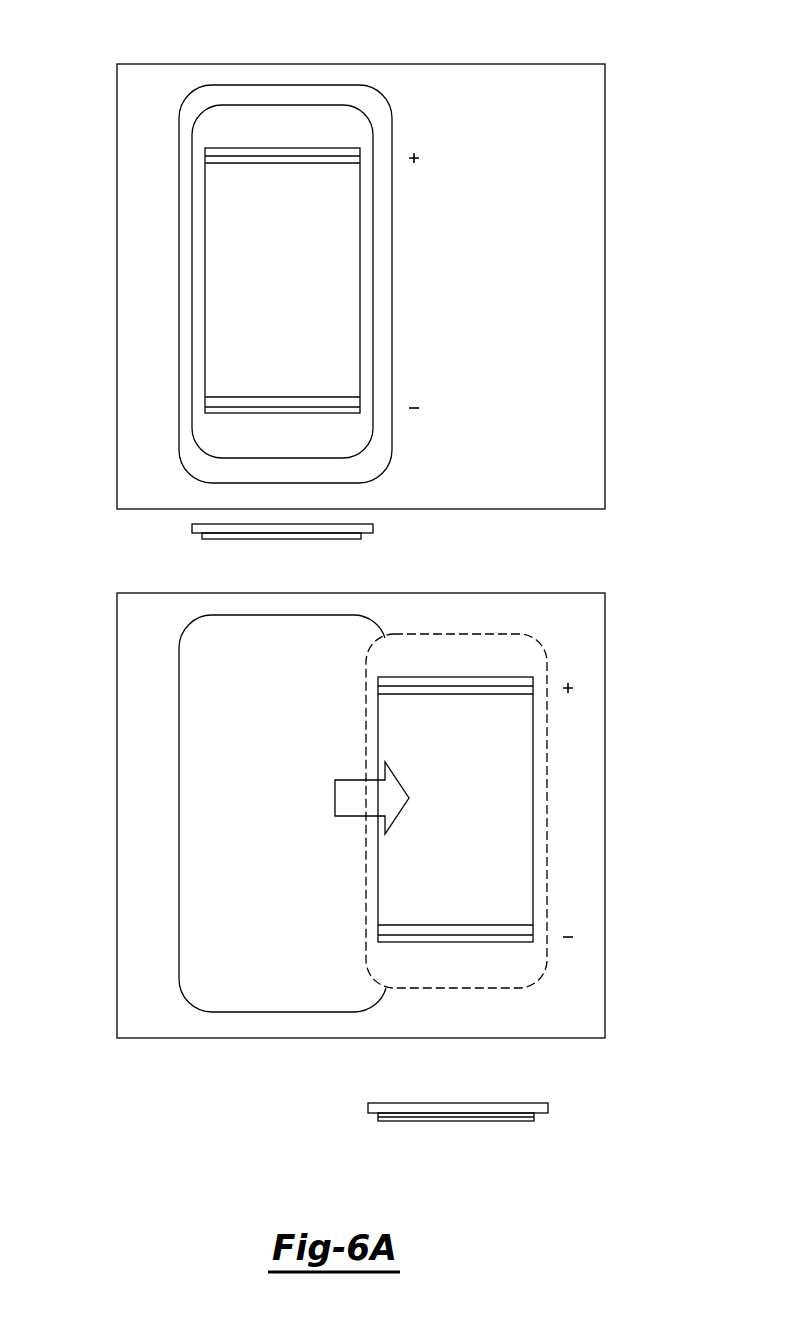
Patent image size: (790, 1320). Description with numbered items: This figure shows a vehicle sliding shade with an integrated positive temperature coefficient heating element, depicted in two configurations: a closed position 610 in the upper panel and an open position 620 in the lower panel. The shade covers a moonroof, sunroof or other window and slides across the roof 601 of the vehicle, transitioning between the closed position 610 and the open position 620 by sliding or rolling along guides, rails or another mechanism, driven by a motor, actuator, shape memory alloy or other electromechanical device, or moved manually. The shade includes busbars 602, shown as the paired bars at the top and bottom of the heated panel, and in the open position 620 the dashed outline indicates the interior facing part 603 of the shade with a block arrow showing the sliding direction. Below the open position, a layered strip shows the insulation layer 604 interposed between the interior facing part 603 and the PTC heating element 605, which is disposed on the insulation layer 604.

The closed position 610 is at (684, 96).
The open position 620 is at (685, 626).
The roof 601 is at (531, 154).
The busbars 602 is at (187, 232).
The interior facing part 603 is at (513, 962).
The insulation layer 604 is at (551, 1136).
The PTC heating element 605 is at (387, 1130).